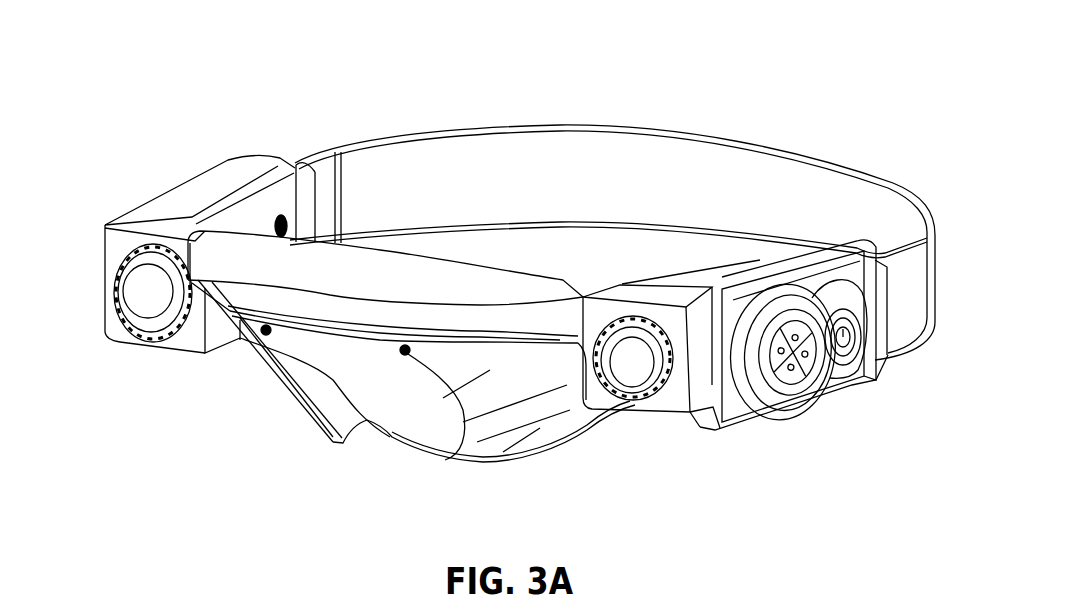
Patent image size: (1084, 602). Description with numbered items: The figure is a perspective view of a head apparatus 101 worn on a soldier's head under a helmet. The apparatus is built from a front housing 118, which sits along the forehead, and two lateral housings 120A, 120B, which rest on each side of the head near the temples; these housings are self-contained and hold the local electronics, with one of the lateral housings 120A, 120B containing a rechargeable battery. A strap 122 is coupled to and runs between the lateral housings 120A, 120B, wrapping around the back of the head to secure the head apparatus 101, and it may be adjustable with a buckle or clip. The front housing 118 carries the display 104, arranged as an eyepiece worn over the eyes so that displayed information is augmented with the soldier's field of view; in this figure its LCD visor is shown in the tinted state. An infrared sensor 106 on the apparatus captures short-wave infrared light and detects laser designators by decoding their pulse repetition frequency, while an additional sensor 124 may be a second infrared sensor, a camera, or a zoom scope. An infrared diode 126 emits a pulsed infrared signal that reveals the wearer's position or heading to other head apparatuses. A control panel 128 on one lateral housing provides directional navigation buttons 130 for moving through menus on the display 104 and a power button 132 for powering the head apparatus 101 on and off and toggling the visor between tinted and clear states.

The head apparatus 101 is at (172, 116).
The display 104 is at (337, 443).
The infrared sensor 106 is at (148, 308).
The front housing 118 is at (398, 276).
The lateral housing 120A is at (215, 187).
The lateral housing 120B is at (815, 262).
The strap 122 is at (572, 127).
The additional sensor 124 is at (635, 405).
The infrared diode 126 is at (410, 355).
The control panel 128 is at (740, 432).
The directional navigation buttons 130 is at (800, 400).
The power button 132 is at (864, 382).